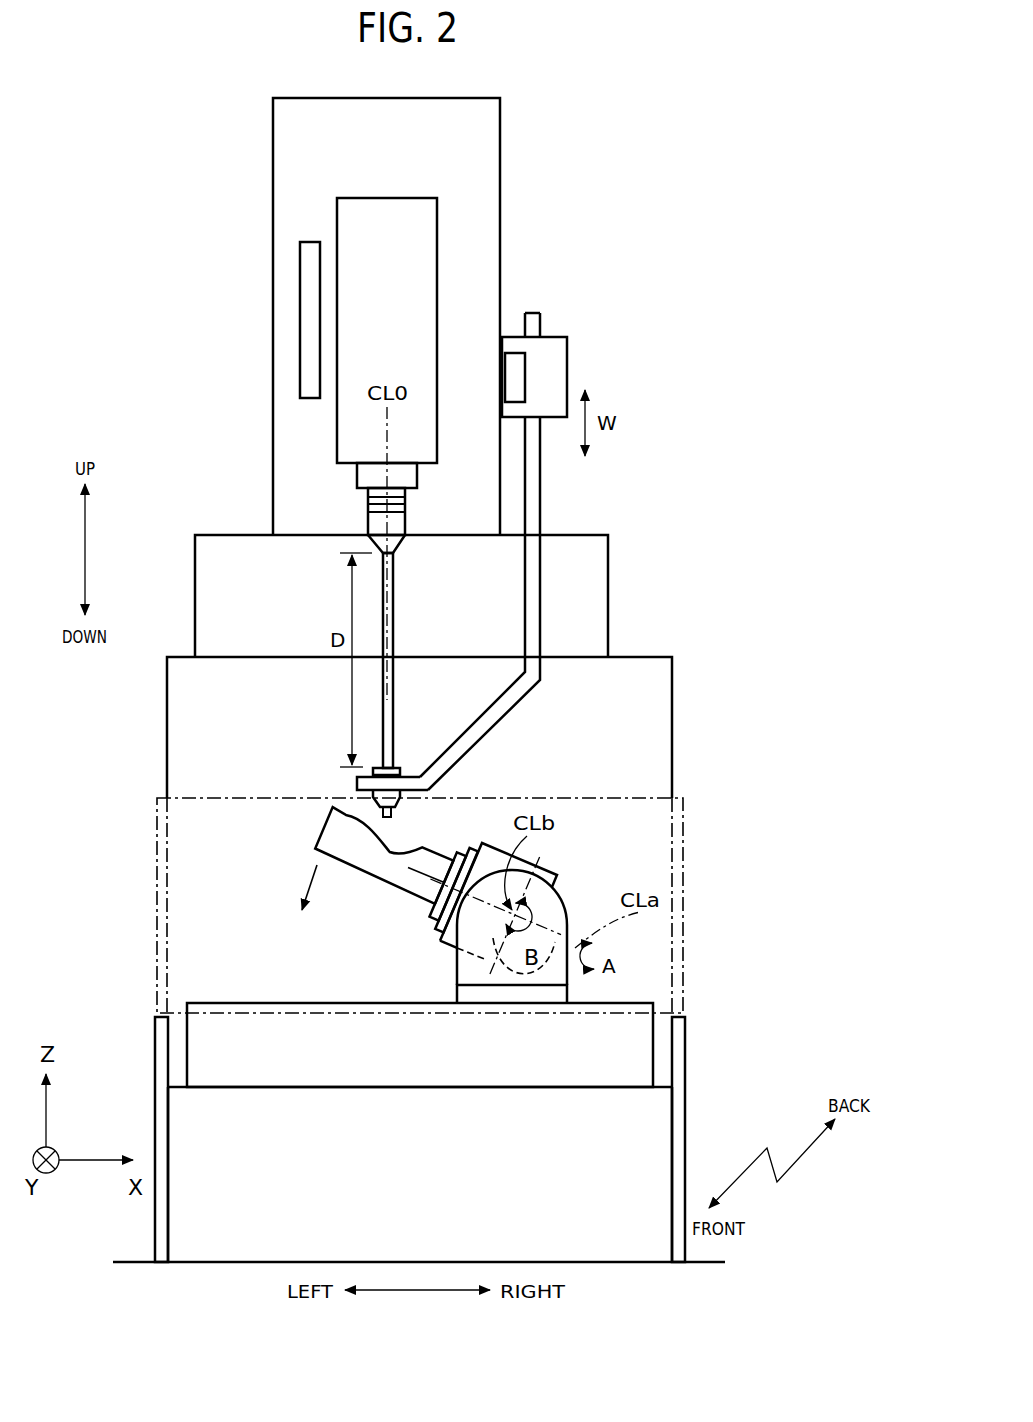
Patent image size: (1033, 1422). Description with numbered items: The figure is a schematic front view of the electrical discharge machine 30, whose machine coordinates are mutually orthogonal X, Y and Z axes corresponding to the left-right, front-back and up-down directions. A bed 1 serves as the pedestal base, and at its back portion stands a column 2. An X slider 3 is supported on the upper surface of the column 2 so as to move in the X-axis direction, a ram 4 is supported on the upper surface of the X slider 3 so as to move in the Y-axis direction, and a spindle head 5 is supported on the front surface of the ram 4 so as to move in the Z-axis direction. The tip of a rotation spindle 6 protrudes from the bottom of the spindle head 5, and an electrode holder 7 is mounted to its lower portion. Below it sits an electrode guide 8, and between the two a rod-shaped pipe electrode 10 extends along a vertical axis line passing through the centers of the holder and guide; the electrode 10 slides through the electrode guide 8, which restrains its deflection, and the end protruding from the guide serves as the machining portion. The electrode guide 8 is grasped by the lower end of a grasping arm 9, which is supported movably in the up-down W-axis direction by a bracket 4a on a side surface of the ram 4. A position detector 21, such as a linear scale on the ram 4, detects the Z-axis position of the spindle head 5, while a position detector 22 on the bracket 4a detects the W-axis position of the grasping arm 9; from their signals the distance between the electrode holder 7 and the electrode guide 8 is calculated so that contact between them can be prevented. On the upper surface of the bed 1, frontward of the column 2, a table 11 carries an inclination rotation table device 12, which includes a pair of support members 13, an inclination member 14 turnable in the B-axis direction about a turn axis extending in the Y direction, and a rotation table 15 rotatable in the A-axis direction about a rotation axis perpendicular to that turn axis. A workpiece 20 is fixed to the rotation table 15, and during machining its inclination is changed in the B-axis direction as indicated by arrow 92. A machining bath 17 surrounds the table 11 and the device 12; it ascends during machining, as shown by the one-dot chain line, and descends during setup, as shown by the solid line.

The electrical discharge machine 30 is at (622, 170).
The bed 1 is at (627, 1143).
The column 2 is at (672, 683).
The X slider 3 is at (608, 560).
The ram 4 is at (500, 192).
The bracket 4a is at (568, 365).
The spindle head 5 is at (337, 222).
The rotation spindle 6 is at (357, 477).
The electrode holder 7 is at (368, 520).
The electrode guide 8 is at (383, 803).
The grasping arm 9 is at (540, 496).
The electrode 10 is at (395, 624).
The table 11 is at (627, 1060).
The inclination rotation table device 12 is at (643, 858).
The support members 13 is at (570, 978).
The inclination member 14 is at (558, 872).
The rotation table 15 is at (437, 938).
The machining bath 17 is at (153, 1048).
The workpiece 20 is at (323, 832).
The position detector 21 is at (300, 345).
The position detector 22 is at (527, 362).
The arrow 92 is at (305, 883).